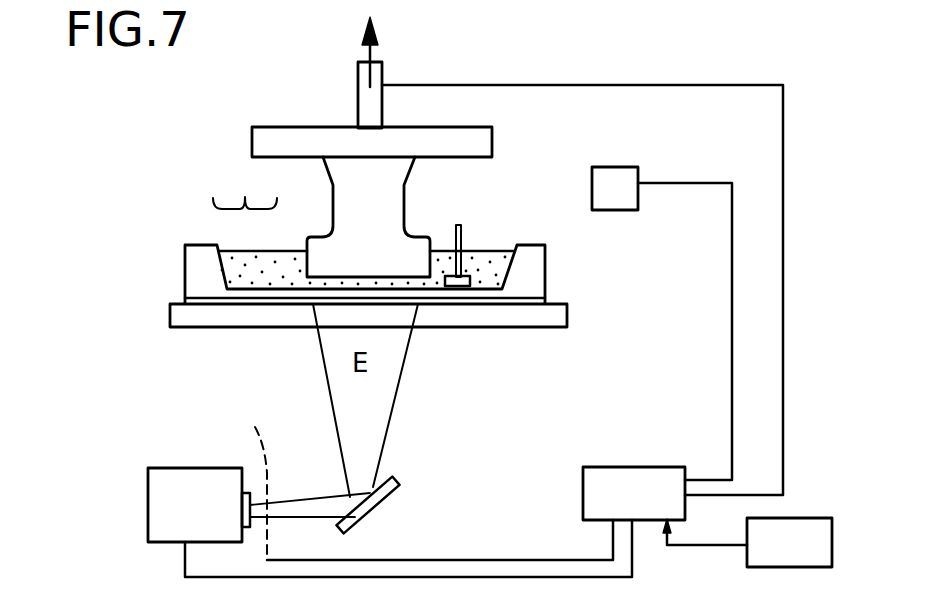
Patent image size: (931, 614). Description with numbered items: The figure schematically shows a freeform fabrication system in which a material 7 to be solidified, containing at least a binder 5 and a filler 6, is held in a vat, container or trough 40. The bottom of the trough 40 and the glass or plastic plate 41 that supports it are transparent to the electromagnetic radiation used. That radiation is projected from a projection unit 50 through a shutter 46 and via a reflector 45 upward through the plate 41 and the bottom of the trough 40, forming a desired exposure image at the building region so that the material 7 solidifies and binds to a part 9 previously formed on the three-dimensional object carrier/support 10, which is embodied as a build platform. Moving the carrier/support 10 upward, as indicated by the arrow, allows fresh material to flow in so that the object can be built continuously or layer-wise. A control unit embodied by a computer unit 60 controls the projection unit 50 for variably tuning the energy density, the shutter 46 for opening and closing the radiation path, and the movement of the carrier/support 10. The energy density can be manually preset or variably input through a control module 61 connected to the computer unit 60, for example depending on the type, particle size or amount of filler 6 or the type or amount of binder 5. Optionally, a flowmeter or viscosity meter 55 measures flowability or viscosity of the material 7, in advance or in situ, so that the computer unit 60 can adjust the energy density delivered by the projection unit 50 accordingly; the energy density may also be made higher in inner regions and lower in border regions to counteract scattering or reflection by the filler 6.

The binder 5 is at (228, 262).
The filler 6 is at (265, 263).
The material to be solidified 7 is at (245, 184).
The part 9 is at (380, 213).
The three-dimensional object carrier/support 10 is at (375, 110).
The vat, container or trough 40 is at (517, 270).
The glass or plastic plate 41 is at (567, 315).
The reflector 45 is at (384, 494).
The shutter 46 is at (427, 479).
The projection unit 50 is at (390, 522).
The flowmeter or viscosity meter 55 is at (466, 236).
The control unit / computer unit 60 is at (634, 493).
The control module 61 is at (747, 542).